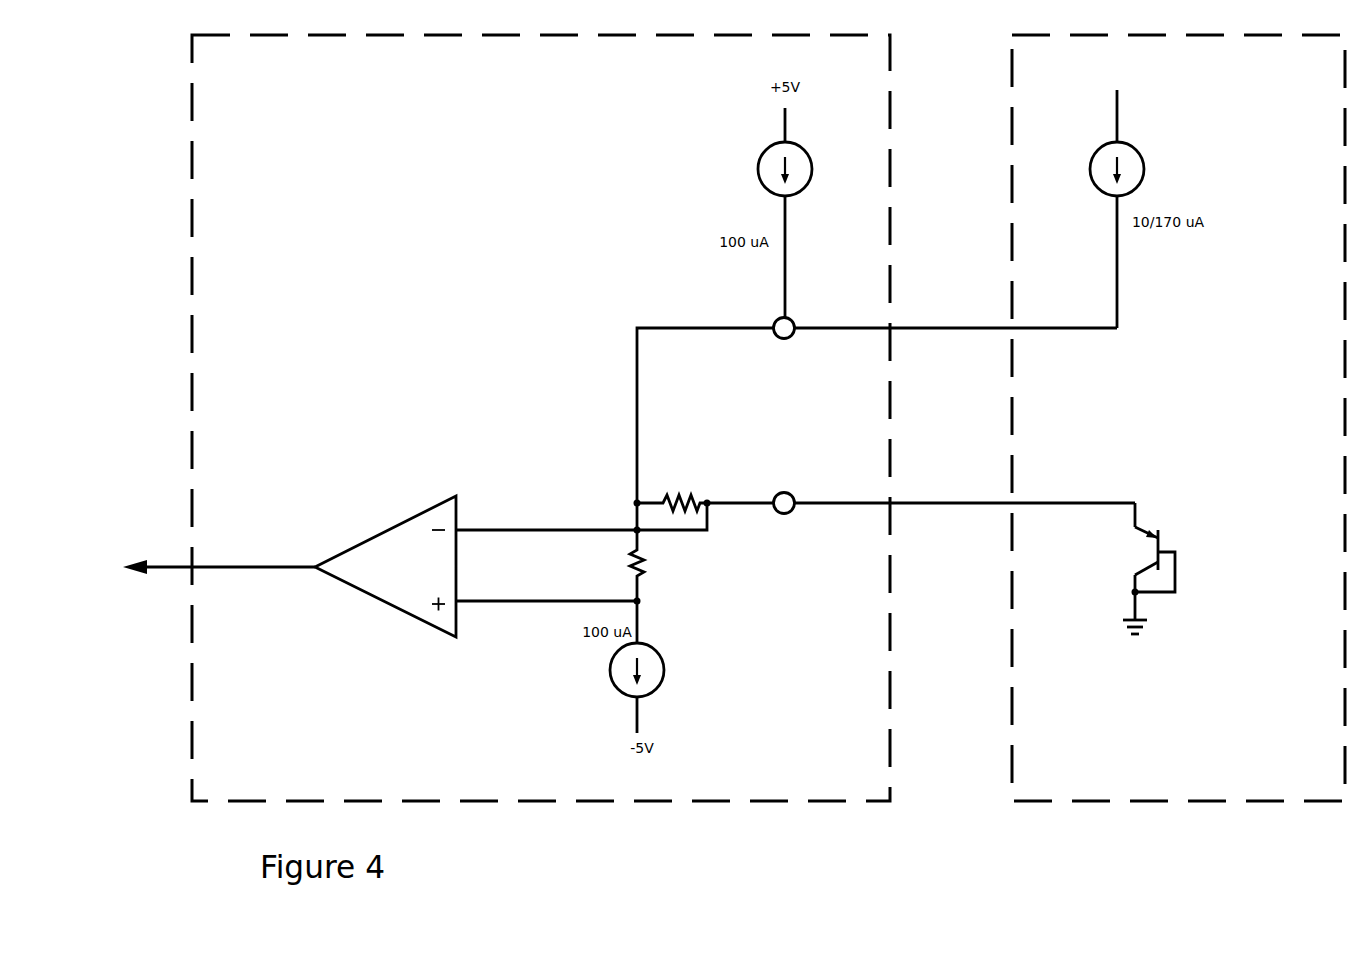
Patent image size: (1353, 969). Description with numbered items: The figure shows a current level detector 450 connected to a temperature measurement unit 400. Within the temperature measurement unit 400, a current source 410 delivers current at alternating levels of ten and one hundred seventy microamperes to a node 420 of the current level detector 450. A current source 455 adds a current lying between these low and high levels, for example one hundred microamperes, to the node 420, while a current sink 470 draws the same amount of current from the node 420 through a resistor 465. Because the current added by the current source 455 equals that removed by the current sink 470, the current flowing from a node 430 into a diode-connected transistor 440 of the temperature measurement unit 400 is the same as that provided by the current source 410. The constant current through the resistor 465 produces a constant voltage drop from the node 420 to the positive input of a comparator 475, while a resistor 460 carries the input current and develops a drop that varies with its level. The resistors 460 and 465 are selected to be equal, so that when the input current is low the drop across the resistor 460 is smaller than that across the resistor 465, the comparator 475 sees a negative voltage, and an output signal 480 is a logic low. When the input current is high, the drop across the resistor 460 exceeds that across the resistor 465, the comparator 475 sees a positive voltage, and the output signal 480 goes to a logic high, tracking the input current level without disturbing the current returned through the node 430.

The temperature measurement unit 400 is at (1163, 86).
The current source 410 is at (1143, 162).
The node 420 is at (792, 318).
The node 430 is at (787, 492).
The diode-connected transistor 440 is at (1148, 530).
The current level detector 450 is at (524, 88).
The current source 455 is at (803, 152).
The resistor 460 is at (668, 497).
The resistor 465 is at (644, 568).
The current sink 470 is at (662, 657).
The comparator 475 is at (456, 497).
The output signal 480 is at (207, 565).